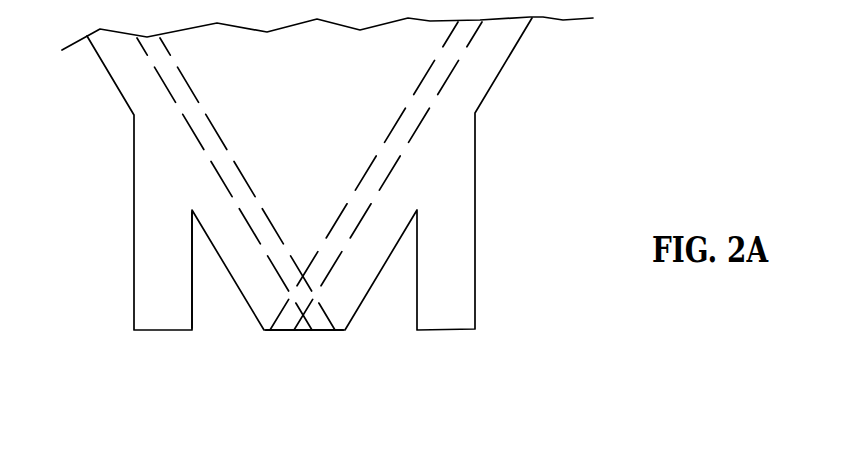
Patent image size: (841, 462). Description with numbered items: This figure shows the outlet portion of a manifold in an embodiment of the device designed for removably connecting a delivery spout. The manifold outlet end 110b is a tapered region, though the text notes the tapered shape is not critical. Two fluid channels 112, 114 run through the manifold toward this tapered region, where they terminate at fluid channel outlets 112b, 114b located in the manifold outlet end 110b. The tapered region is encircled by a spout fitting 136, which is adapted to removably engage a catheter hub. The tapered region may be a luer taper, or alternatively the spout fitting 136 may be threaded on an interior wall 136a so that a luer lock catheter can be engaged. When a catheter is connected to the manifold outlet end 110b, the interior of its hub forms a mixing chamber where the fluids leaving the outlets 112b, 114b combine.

The fluid channel 112 is at (199, 69).
The fluid channel 114 is at (469, 69).
The fluid channel outlet 112b is at (323, 328).
The fluid channel outlet 114b is at (277, 328).
The spout fitting 136 is at (154, 340).
The interior wall 136a is at (204, 300).
The manifold outlet end 110b is at (342, 343).